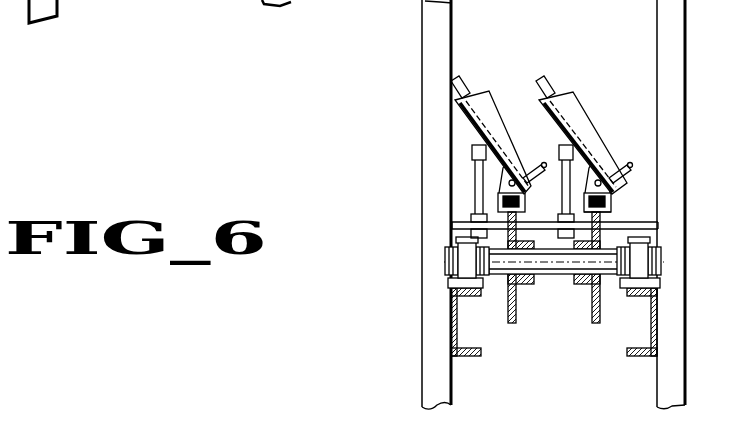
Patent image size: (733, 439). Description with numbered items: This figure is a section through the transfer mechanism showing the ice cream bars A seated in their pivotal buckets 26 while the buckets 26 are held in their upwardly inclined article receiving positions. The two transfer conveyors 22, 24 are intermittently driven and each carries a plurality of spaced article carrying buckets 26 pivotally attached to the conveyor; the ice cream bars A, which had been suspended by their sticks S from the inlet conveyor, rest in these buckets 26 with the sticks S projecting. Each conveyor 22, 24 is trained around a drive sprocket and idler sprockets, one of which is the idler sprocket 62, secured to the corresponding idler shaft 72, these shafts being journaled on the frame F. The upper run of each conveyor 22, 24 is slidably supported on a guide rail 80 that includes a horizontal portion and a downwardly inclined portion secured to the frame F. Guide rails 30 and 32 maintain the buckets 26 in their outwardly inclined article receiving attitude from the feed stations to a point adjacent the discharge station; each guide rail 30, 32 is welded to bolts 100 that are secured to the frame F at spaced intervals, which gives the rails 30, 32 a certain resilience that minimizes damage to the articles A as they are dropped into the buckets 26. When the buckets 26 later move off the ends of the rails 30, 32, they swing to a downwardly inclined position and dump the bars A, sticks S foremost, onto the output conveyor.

The frame F is at (430, 338).
The transfer conveyor 22 is at (607, 200).
The transfer conveyor 24 is at (502, 200).
The article carrying bucket 26 is at (540, 91).
The guide rail 30 is at (591, 122).
The guide rail 32 is at (482, 139).
The idler sprocket 62 is at (586, 317).
The idler shaft 72 is at (558, 272).
The guide rail 80 is at (608, 208).
The bolt 100 is at (474, 172).
The stick S is at (540, 82).
The ice cream bar A is at (530, 163).